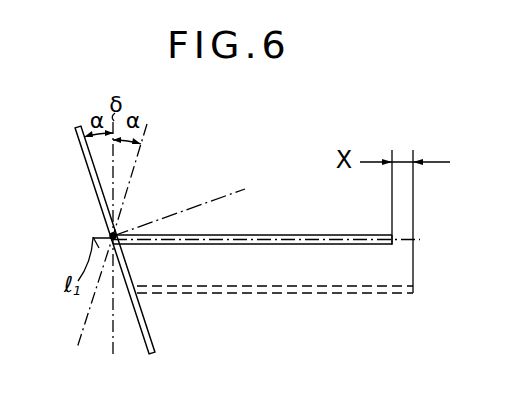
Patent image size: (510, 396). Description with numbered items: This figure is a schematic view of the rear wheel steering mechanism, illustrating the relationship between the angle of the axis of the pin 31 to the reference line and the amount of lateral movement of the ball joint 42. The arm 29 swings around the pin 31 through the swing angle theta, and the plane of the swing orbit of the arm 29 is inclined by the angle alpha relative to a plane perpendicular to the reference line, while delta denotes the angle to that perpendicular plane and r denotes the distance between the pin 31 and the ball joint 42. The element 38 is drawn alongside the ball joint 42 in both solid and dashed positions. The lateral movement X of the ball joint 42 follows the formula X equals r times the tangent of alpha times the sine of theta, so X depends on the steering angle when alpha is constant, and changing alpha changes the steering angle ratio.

The arm 29 is at (94, 186).
The pin 31 is at (226, 192).
The arm 38 is at (287, 233).
The ball joint 42 is at (114, 234).